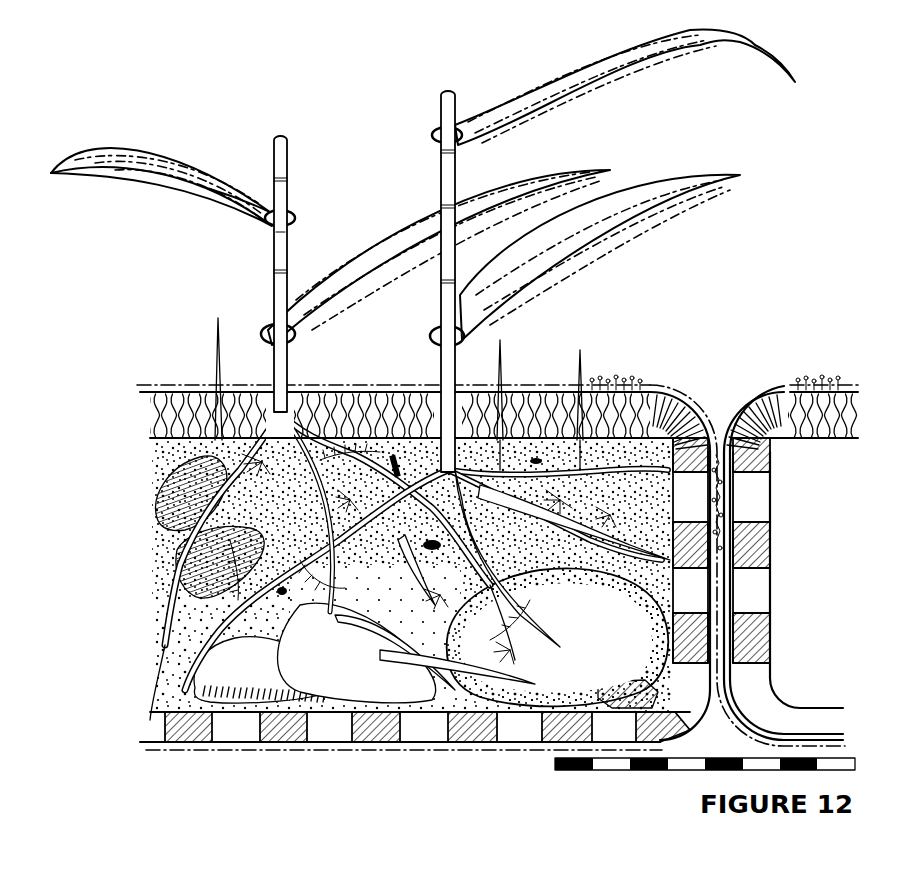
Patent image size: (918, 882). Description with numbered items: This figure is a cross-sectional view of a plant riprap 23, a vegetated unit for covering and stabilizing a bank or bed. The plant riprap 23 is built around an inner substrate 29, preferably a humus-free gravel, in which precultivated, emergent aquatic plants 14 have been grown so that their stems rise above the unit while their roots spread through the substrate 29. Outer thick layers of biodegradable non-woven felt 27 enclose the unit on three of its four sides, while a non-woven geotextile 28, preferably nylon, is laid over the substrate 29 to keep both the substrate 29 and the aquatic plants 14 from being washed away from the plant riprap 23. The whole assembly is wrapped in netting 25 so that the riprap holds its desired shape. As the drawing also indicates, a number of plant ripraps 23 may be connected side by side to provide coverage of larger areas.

The precultivated emergent aquatic plants 14 is at (537, 175).
The netting 25 is at (552, 383).
The non-woven geotextile 28 is at (597, 383).
The plant riprap 23 is at (673, 383).
The biodegradable non-woven felt 27 is at (345, 733).
The inner substrate 29 is at (553, 665).